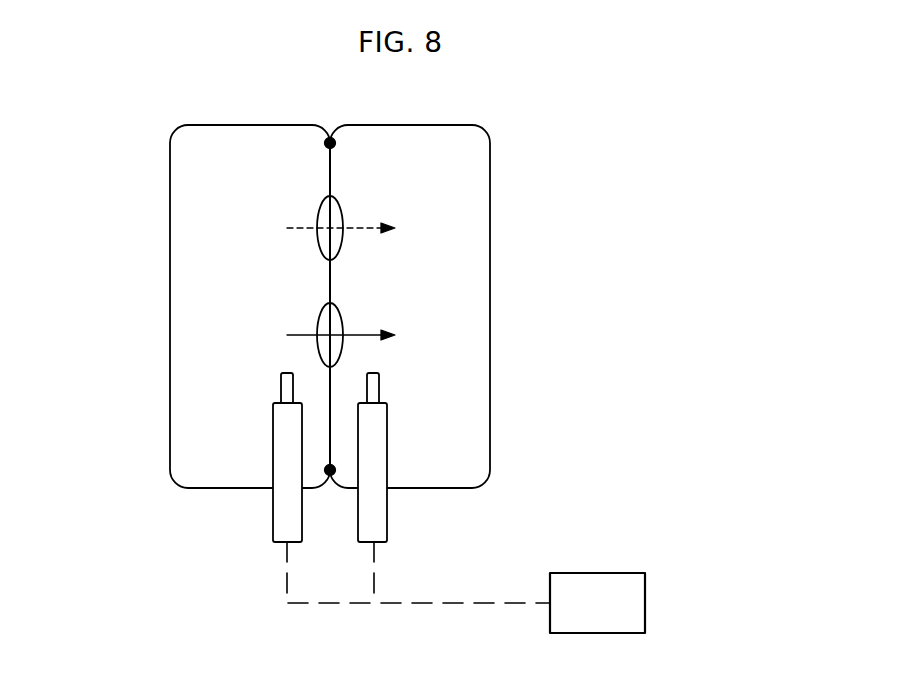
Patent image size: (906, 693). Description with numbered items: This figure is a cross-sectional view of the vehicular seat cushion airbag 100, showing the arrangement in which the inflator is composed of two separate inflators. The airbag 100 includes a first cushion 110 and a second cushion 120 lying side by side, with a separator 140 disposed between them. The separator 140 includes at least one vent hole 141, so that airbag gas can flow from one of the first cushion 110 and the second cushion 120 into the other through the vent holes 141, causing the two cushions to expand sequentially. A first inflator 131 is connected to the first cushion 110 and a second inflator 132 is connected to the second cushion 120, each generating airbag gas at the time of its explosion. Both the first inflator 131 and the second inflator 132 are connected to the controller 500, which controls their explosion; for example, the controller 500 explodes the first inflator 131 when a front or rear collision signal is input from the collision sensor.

The vehicular seat cushion airbag 100 is at (341, 339).
The first cushion 110 is at (185, 303).
The second cushion 120 is at (490, 266).
The first inflator 131 is at (273, 523).
The second inflator 132 is at (387, 523).
The separator 140 is at (330, 168).
The vent hole 141 is at (335, 212).
The controller 500 is at (645, 600).